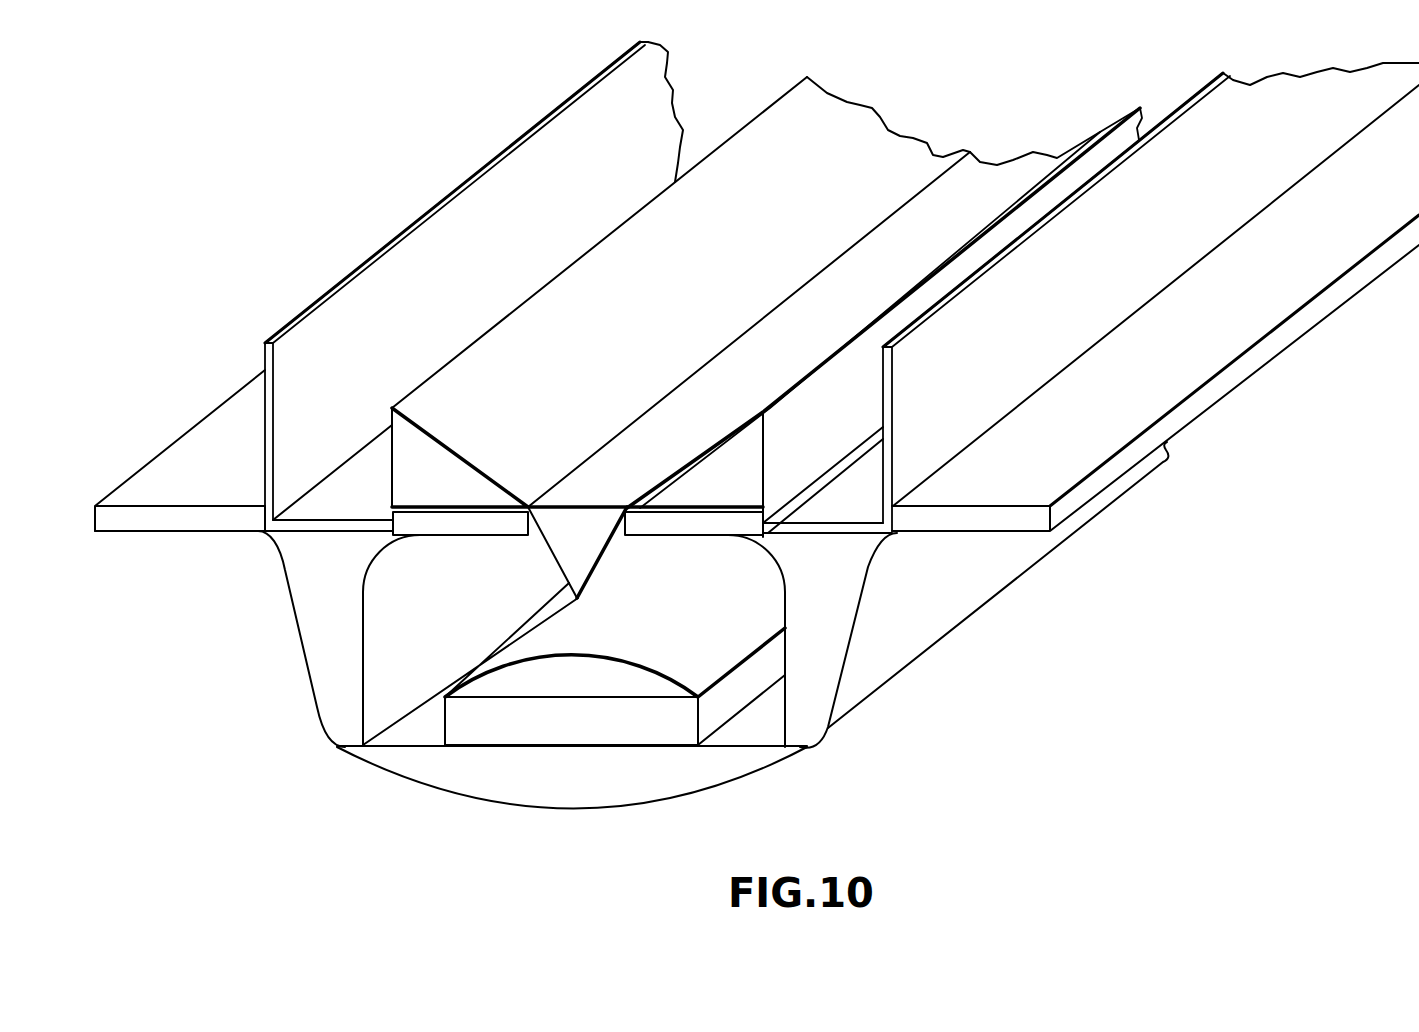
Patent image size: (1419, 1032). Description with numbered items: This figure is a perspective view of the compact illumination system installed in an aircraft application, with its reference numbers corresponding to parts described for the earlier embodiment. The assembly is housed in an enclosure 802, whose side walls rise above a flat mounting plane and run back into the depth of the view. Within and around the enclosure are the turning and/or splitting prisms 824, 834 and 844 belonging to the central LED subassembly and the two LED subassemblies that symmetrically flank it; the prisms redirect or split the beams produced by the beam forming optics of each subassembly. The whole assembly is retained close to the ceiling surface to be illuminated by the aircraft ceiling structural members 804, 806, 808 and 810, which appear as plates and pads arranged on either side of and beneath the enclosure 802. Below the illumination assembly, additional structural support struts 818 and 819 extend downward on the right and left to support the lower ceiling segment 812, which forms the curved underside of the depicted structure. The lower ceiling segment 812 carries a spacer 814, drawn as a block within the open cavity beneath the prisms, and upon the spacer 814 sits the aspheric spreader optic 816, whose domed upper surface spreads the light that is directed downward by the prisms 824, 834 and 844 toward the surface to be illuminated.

The enclosure 802 is at (1196, 110).
The aircraft ceiling structural member 804 is at (1162, 385).
The aircraft ceiling structural member 806 is at (692, 525).
The aircraft ceiling structural member 808 is at (467, 525).
The aircraft ceiling structural member 810 is at (183, 448).
The lower ceiling segment 812 is at (547, 783).
The spacer 814 is at (478, 722).
The aspheric spreader optic 816 is at (537, 643).
The structural support strut 818 is at (813, 710).
The structural support strut 819 is at (317, 617).
The turning and/or splitting prism 824 is at (810, 413).
The turning and/or splitting prism 834 is at (583, 532).
The turning and/or splitting prism 844 is at (507, 340).